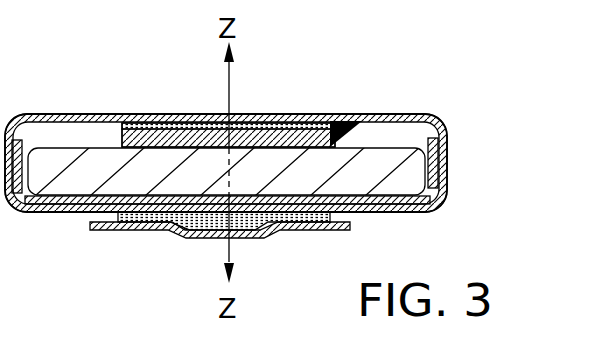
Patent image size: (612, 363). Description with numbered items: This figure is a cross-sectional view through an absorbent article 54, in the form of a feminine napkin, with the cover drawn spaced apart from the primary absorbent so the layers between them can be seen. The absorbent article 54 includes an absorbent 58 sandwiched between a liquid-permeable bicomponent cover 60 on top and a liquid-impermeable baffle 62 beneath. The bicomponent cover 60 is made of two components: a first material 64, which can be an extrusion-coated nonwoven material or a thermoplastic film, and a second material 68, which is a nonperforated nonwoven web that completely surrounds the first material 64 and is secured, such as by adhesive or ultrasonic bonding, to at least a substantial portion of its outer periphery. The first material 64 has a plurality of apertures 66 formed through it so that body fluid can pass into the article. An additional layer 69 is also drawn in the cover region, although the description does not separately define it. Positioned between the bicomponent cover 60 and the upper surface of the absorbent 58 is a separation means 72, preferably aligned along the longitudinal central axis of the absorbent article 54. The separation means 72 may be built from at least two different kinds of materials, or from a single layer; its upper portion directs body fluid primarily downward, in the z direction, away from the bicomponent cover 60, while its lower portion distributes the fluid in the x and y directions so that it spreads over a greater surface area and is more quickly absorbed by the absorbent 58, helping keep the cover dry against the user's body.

The absorbent article 54 is at (525, 55).
The absorbent 58 is at (430, 117).
The bicomponent cover 60 is at (434, 148).
The baffle 62 is at (437, 192).
The first material 64 is at (195, 104).
The apertures 66 is at (287, 120).
The second material 68 is at (78, 113).
The top electrode layer 69 is at (167, 120).
The separation means 72 is at (347, 122).